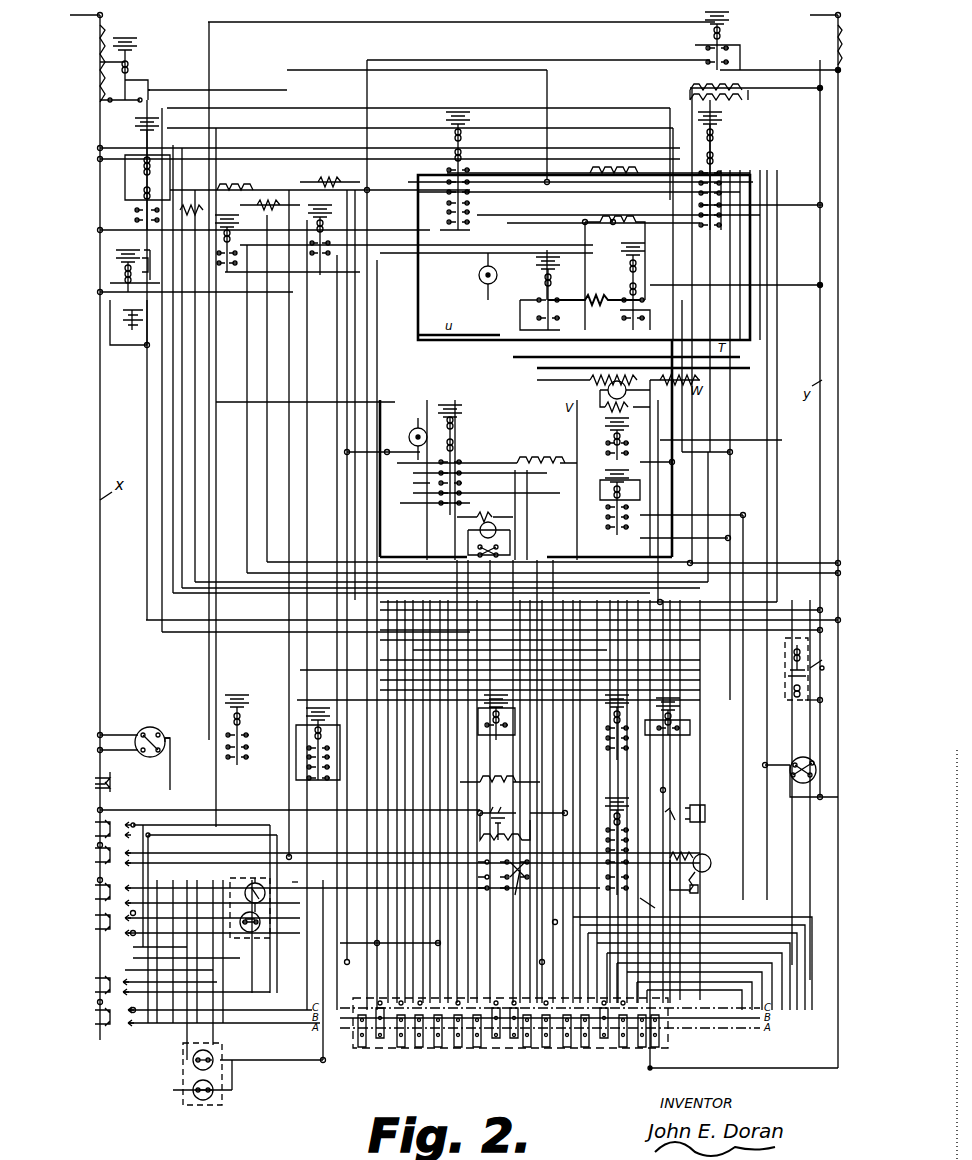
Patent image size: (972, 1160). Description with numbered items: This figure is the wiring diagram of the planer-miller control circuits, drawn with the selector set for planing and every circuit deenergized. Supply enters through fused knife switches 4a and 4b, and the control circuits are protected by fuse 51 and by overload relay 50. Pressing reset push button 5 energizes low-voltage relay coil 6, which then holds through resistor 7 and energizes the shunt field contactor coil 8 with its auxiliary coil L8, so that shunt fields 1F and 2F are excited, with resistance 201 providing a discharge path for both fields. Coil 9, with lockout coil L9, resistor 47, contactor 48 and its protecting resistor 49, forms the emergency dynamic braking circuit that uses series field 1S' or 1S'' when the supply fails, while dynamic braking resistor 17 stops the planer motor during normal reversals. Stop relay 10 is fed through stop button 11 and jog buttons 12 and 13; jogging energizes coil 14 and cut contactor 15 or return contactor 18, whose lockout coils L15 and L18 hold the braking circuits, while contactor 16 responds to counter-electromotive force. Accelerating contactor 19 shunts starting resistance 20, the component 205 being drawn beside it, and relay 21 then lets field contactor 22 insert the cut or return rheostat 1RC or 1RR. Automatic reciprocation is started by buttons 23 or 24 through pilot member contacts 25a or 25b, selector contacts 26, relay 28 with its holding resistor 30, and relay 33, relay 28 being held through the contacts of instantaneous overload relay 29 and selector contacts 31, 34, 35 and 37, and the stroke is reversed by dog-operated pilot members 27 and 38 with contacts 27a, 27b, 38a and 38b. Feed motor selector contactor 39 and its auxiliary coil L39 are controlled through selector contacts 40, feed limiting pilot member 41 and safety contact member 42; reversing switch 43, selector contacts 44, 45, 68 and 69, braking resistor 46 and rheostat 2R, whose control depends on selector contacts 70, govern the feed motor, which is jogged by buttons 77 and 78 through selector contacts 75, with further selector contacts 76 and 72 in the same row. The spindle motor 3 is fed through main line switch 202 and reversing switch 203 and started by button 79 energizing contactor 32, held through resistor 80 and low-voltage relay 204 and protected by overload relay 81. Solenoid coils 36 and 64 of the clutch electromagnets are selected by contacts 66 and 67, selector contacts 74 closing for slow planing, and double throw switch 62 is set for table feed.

The fused knife switch 4a is at (111, 15).
The fused knife switch 4b is at (822, 21).
The fuse 51 is at (98, 80).
The overload relay 50 is at (128, 70).
The shunt field contactor coil 8 is at (147, 174).
The relay coil L8 is at (138, 211).
The low-voltage relay coil 6 is at (123, 271).
The resistor 7 is at (143, 265).
The reset push button 5 is at (128, 322).
The resistance 201 is at (235, 181).
The cut field rheostat 1RC is at (190, 204).
The return field rheostat 1RR is at (270, 199).
The feed motor rheostat 2R is at (330, 173).
The field contactor coil 22 is at (230, 251).
The relay coil 21 is at (324, 248).
The cut contactor coil 15 is at (462, 136).
The lockout coil L15 is at (462, 156).
The pilot member 41 is at (478, 286).
The contactor 48 is at (542, 278).
The protecting resistor 49 is at (614, 273).
The coil 9 is at (632, 286).
The lockout coil L9 is at (625, 288).
The resistor 47 is at (594, 308).
The dynamic braking resistor 17 is at (614, 163).
The accelerating contactor coil 19 is at (720, 34).
The resistor 205 is at (719, 83).
The starting resistance 20 is at (721, 167).
The return contactor coil 18 is at (727, 133).
The lockout coil L18 is at (717, 202).
The series field 1S' is at (588, 388).
The series field 1S'' is at (701, 401).
The shunt field 1F is at (625, 396).
The coil 14 is at (611, 439).
The contactor coil 16 is at (626, 488).
The safety contact member 42 is at (426, 438).
The feed motor selector contactor coil 39 is at (450, 422).
The relay coil L39 is at (452, 445).
The dynamic braking resistor 46 is at (520, 462).
The shunt field 2F is at (520, 517).
The reversing switch 43 is at (478, 545).
The automatic pilot member contacts 25a is at (150, 733).
The automatic pilot member contacts 25b is at (126, 753).
The stop push button 11 is at (95, 772).
The jog push button 12 is at (97, 826).
The jog push button 13 is at (97, 858).
The jog push button 77 is at (97, 897).
The jog push button 78 is at (97, 928).
The start push button 23 is at (97, 985).
The start push button 24 is at (97, 1020).
The stop relay coil 10 is at (235, 740).
The automatic relay coil 33 is at (326, 734).
The low voltage relay 204 is at (505, 712).
The relay coil 28 is at (610, 716).
The instantaneous overload relay 29 is at (676, 712).
The resistor 30 is at (498, 780).
The push button 79 is at (523, 818).
The resistor 80 is at (487, 858).
The main line switch 202 is at (482, 905).
The reversing switch 203 is at (528, 905).
The spindle contactor coil 32 is at (610, 816).
The overload relay 81 is at (683, 803).
The alternating current spindle motor 3 is at (690, 872).
The electromagnet 36 is at (785, 652).
The electromagnet 64 is at (808, 700).
The switch 62 is at (801, 767).
The automatic pilot member 38 is at (240, 888).
The automatic pilot member contacts 38a is at (265, 895).
The switch 38b is at (250, 935).
The automatic pilot member 27 is at (200, 1105).
The automatic pilot member contacts 27a is at (222, 1062).
The automatic pilot member contacts 27b is at (222, 1092).
The selector switch contacts 26 is at (362, 1048).
The selector contacts 74 is at (380, 1040).
The selector switch contacts 75 is at (419, 1048).
The contact 76 is at (401, 1048).
The selector contacts 70 is at (438, 1048).
The selector switch contacts 40 is at (458, 1048).
The selector switch contacts 44 is at (477, 1048).
The selector contacts 68 is at (496, 1040).
The selector contacts 69 is at (514, 1040).
The selector switch contacts 45 is at (527, 1048).
The selector switch contacts 37 is at (546, 1048).
The selector switch contacts 31 is at (567, 1048).
The selector switch contacts 34 is at (585, 1048).
The selector contacts 67 is at (604, 1040).
The contact 72 is at (623, 1048).
The selector contacts 66 is at (642, 1048).
The selector switch contacts 35 is at (658, 1048).